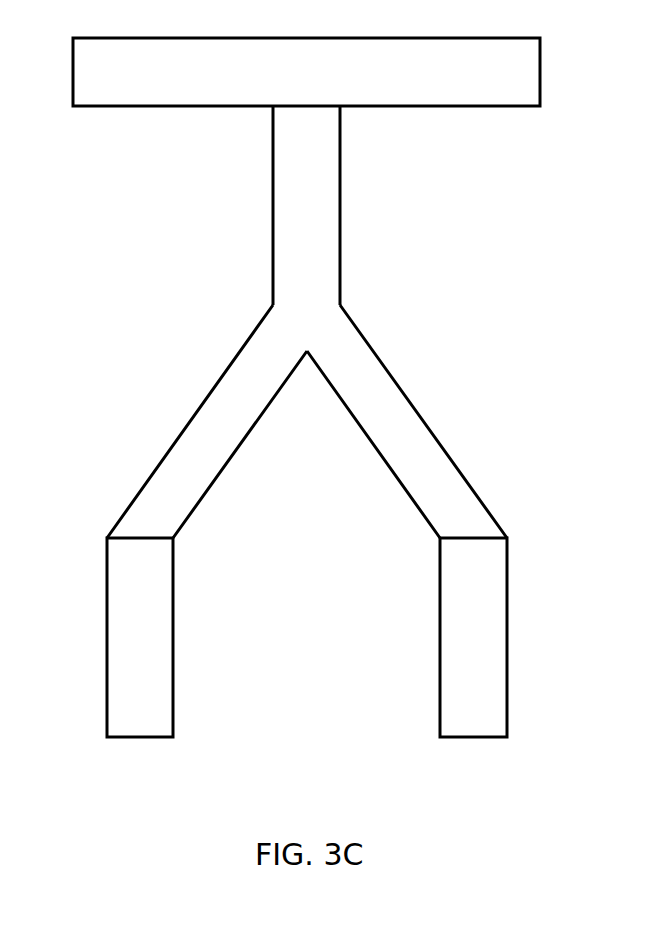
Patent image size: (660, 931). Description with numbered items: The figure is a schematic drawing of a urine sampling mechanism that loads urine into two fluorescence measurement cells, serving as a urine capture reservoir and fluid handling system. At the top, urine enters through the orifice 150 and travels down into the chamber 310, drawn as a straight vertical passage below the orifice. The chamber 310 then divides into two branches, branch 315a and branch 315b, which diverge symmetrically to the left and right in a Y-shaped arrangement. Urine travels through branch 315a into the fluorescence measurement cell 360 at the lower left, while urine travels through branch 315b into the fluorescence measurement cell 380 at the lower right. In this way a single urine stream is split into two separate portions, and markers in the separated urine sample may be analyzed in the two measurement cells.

The orifice 150 is at (503, 38).
The chamber 310 is at (340, 222).
The branch 315a is at (198, 410).
The branch 315b is at (422, 420).
The fluorescence measurement cell 360 is at (142, 737).
The fluorescence measurement cell 380 is at (472, 737).